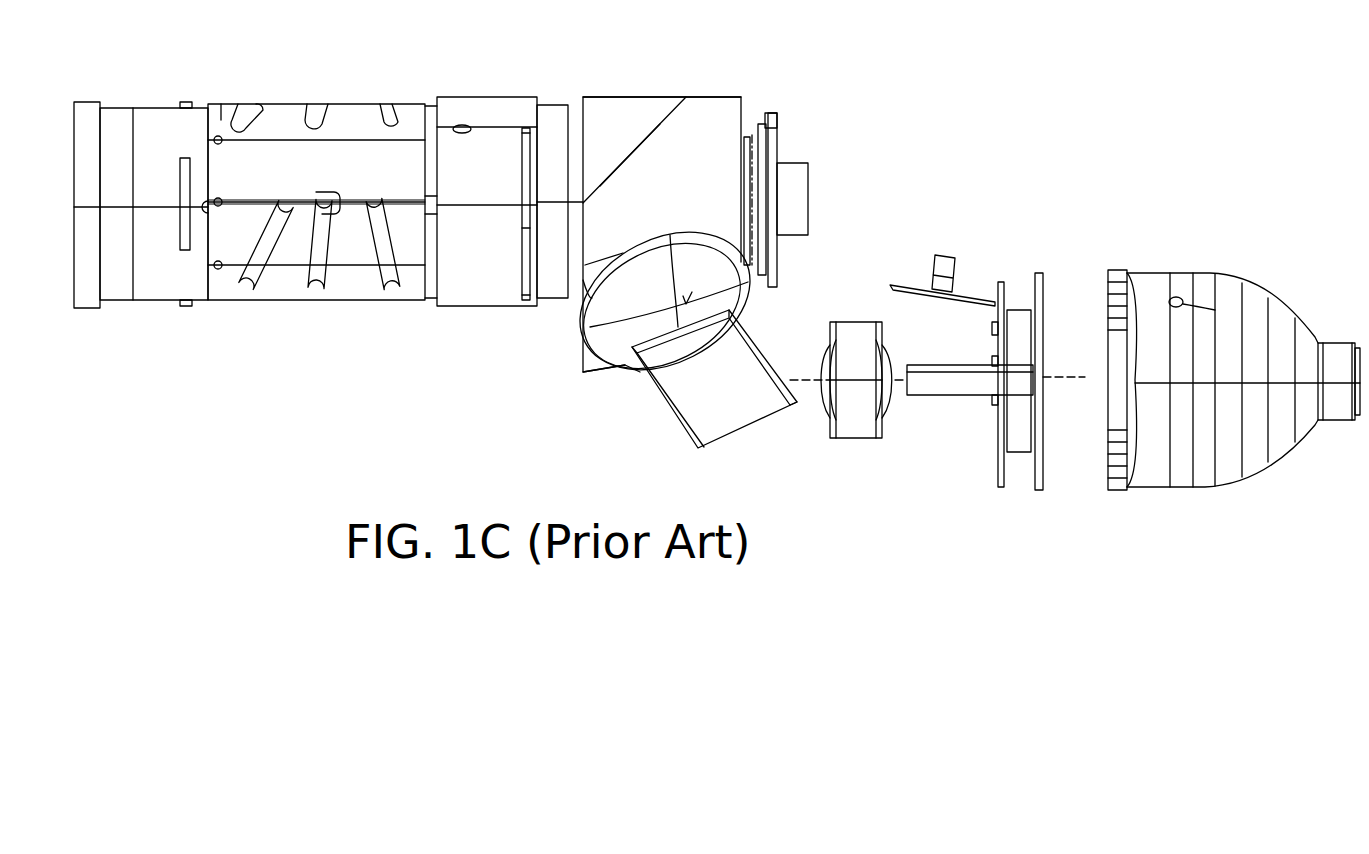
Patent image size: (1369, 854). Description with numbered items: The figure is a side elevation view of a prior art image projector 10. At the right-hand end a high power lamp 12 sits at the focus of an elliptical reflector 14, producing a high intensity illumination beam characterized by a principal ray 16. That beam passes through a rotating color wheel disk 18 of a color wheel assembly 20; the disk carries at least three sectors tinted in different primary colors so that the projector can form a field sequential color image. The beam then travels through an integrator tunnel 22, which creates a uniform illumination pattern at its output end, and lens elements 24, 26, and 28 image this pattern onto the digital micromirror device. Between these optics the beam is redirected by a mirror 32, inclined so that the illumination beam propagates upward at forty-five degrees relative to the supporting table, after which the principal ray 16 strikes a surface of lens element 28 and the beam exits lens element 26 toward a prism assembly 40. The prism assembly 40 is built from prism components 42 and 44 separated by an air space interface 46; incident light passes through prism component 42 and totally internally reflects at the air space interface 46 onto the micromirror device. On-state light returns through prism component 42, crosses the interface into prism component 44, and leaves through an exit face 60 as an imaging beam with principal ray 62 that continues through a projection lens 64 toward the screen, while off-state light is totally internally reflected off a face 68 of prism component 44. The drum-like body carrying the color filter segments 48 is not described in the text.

The image projector 10 is at (288, 336).
The high power lamp 12 is at (1338, 348).
The elliptical reflector 14 is at (1257, 300).
The principal ray 16 is at (688, 298).
The color wheel disk 18 is at (780, 125).
The color wheel assembly 20 is at (789, 102).
The integrator tunnel 22 is at (947, 392).
The lens element 24 is at (888, 400).
The lens element 26 is at (826, 400).
The lens element 28 is at (622, 357).
The mirror 32 is at (697, 403).
The prism assembly 40 is at (715, 70).
The prism component 42 is at (581, 352).
The prism component 44 is at (614, 95).
The air space interface 46 is at (636, 150).
The dome window 48 is at (592, 280).
The exit face 60 is at (583, 128).
The principal ray 62 is at (88, 213).
The projection lens 64 is at (350, 104).
The face 68 is at (647, 97).